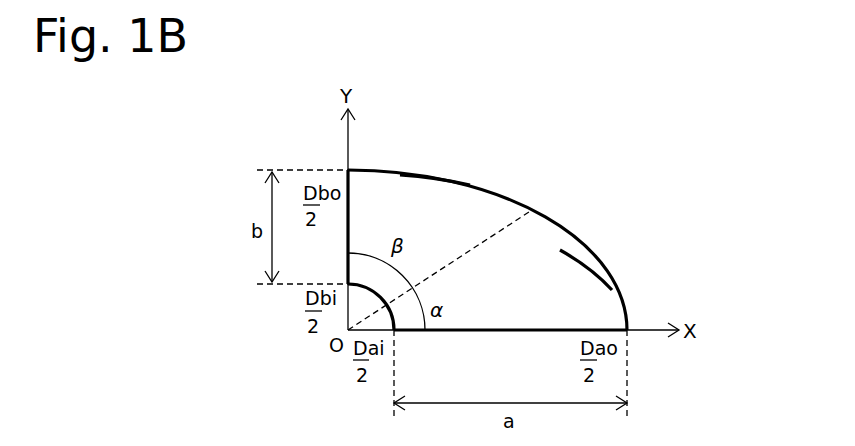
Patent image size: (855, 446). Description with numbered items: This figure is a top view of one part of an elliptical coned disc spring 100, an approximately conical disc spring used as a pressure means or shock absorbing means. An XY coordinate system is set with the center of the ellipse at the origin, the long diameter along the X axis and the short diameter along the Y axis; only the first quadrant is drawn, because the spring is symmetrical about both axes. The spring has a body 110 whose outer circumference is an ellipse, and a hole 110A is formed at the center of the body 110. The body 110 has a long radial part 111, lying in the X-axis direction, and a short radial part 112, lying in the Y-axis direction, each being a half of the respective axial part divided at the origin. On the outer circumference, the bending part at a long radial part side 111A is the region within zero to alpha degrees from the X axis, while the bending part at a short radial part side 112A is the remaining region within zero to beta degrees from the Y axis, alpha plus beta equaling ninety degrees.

The elliptical coned disc spring 100 is at (509, 243).
The body 110 is at (545, 235).
The hole 110A is at (372, 310).
The long radial part 111 is at (595, 328).
The bending part at a long radial part side 111A is at (630, 232).
The short radial part 112 is at (349, 198).
The bending part at a short radial part side 112A is at (452, 180).